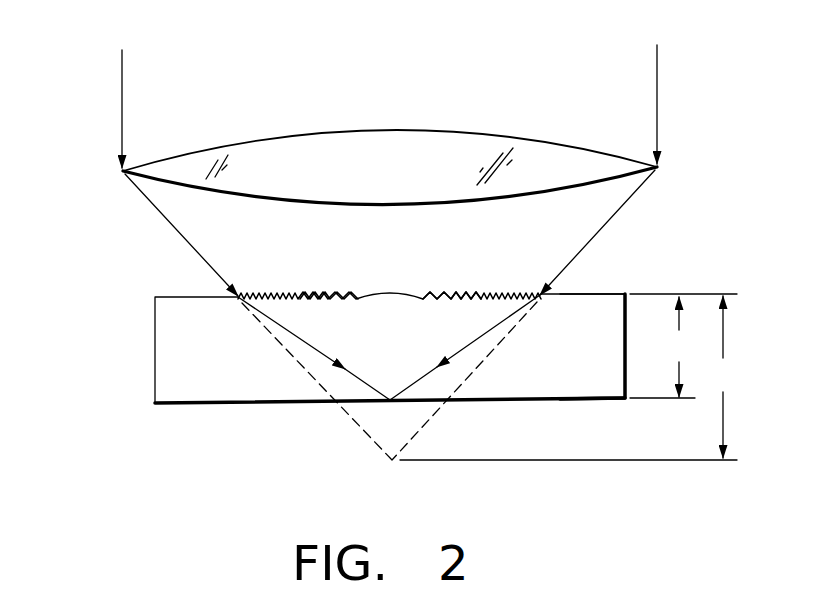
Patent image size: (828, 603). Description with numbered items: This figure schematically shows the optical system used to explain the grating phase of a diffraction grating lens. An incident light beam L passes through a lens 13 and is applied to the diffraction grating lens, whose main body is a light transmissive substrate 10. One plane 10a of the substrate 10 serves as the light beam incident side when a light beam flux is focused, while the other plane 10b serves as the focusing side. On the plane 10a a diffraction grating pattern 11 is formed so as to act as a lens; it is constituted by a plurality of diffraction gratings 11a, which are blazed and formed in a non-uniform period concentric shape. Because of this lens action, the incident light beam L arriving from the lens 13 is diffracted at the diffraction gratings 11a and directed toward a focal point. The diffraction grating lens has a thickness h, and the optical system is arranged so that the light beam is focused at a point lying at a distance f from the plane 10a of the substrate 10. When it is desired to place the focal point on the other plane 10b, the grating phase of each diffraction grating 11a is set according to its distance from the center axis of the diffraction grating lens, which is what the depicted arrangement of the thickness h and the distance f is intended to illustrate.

The lens 13 is at (567, 152).
The incident light beam L is at (170, 229).
The light transmissive substrate 10 is at (155, 385).
The diffraction grating pattern 11 is at (503, 290).
The diffraction gratings 11a is at (349, 297).
The plane 10a is at (598, 300).
The other plane 10b is at (595, 401).
The thickness h is at (683, 346).
The distance f is at (568, 378).